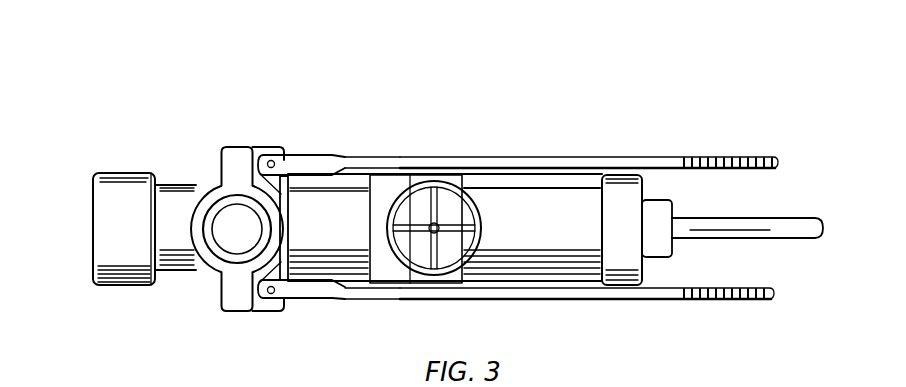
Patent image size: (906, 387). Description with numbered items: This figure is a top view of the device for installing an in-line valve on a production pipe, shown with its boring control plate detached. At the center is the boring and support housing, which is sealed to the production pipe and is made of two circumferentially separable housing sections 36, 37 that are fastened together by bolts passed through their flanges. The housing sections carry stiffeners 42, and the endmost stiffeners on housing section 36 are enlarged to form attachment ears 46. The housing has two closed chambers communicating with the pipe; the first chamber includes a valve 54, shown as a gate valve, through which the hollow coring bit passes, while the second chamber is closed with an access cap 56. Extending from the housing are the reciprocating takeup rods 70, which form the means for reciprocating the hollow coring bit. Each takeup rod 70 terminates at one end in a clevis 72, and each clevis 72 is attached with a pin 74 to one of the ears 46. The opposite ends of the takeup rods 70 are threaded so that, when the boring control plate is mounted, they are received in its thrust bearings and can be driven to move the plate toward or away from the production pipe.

The housing section 36 is at (282, 172).
The housing section 37 is at (207, 178).
The stiffeners 42 is at (213, 287).
The attachment ears 46 is at (272, 160).
The valve 54 is at (447, 182).
The access cap 56 is at (100, 242).
The reciprocating takeup rods 70 is at (552, 165).
The clevis 72 is at (332, 156).
The pin 74 is at (257, 150).